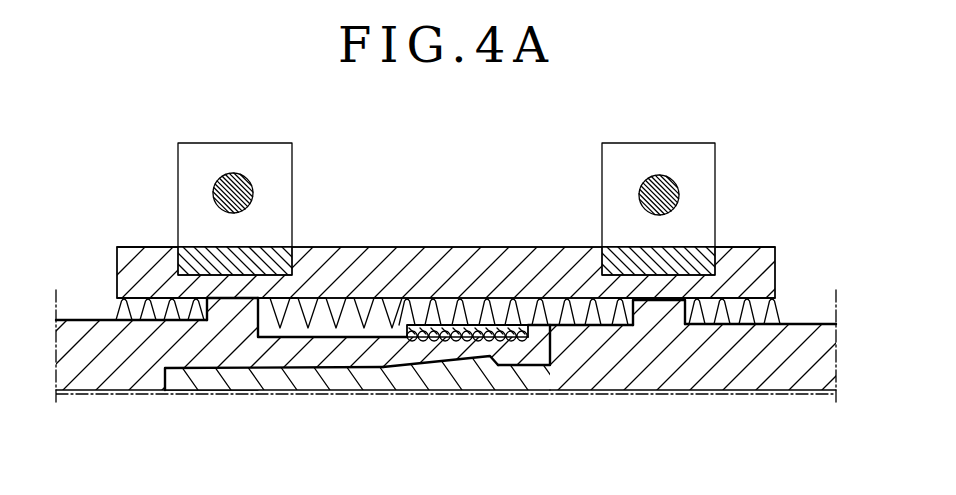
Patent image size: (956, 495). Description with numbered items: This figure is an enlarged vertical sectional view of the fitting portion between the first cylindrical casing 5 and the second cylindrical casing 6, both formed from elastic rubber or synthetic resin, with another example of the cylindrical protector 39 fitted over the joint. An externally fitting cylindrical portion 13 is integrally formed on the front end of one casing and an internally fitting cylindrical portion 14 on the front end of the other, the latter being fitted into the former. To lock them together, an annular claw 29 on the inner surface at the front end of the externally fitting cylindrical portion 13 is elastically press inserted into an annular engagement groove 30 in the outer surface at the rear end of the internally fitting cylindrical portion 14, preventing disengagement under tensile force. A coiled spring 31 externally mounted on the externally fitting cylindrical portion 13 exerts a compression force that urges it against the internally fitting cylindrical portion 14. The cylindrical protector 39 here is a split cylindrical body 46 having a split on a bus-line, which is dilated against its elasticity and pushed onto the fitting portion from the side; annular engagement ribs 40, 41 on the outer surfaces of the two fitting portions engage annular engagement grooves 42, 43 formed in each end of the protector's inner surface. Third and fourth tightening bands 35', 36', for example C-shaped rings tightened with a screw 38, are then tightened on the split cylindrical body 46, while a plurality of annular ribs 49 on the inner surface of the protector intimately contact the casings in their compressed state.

The first cylindrical casing 5 is at (94, 373).
The second cylindrical casing 6 is at (765, 373).
The externally fitting cylindrical portion 13 is at (372, 355).
The internally fitting cylindrical portion 14 is at (302, 380).
The annular claw 29 is at (553, 367).
The annular engagement groove 30 is at (512, 367).
The coiled spring 31 is at (452, 330).
The third tightening band 35' is at (248, 209).
The fourth tightening band 36' is at (644, 209).
The screw 38 is at (252, 188).
The cylindrical protector 39 is at (482, 258).
The annular engagement rib 40 is at (232, 308).
The annular engagement rib 41 is at (658, 310).
The annular engagement groove 42 is at (222, 293).
The annular engagement groove 43 is at (672, 283).
The split cylindrical body 46 is at (446, 272).
The annular ribs 49 is at (116, 318).